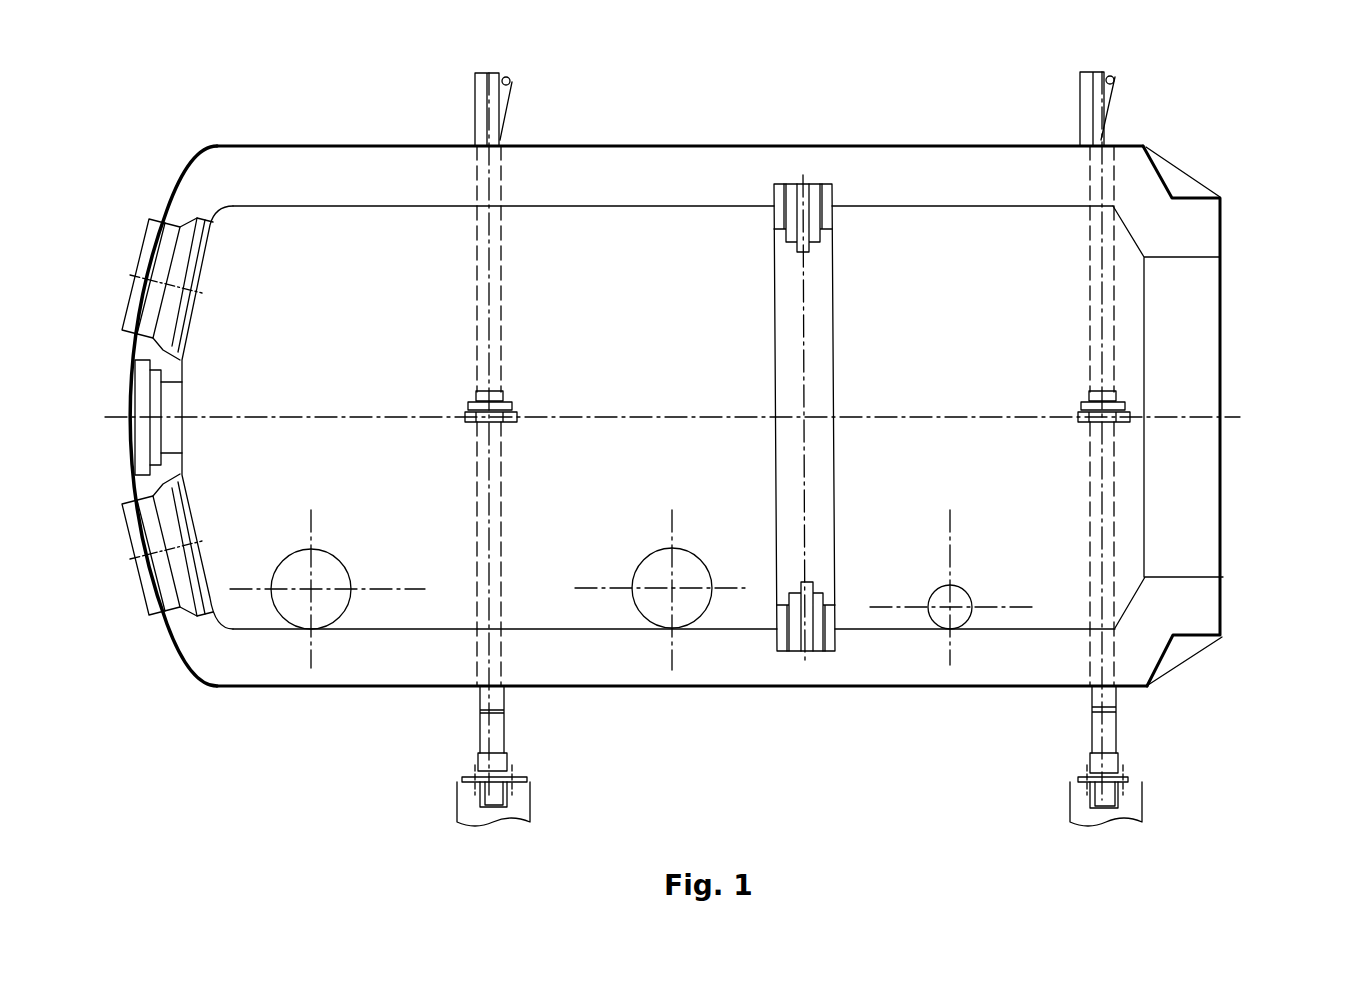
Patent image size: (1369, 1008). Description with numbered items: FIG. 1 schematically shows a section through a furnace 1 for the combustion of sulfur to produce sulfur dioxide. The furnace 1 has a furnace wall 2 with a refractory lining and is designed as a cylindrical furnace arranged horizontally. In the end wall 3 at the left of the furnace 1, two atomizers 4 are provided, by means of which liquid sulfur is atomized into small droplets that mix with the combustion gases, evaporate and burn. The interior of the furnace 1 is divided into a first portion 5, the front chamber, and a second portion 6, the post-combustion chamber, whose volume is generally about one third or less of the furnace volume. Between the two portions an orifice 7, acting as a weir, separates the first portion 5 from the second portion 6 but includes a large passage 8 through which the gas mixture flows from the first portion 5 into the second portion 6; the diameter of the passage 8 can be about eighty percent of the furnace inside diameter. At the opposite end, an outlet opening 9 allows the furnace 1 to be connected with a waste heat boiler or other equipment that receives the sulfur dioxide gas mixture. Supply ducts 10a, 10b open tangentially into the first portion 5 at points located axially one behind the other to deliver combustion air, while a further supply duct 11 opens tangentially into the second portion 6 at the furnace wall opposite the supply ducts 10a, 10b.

The furnace 1 is at (1250, 142).
The furnace wall 2 is at (682, 165).
The end wall 3 is at (172, 193).
The atomizer 4 is at (127, 297).
The first portion 5 is at (572, 358).
The second portion 6 is at (962, 353).
The orifice 7 is at (832, 210).
The passage 8 is at (830, 359).
The outlet opening 9 is at (1205, 350).
The supply duct 10a is at (290, 608).
The supply duct 10b is at (685, 610).
The supply duct 11 is at (960, 617).